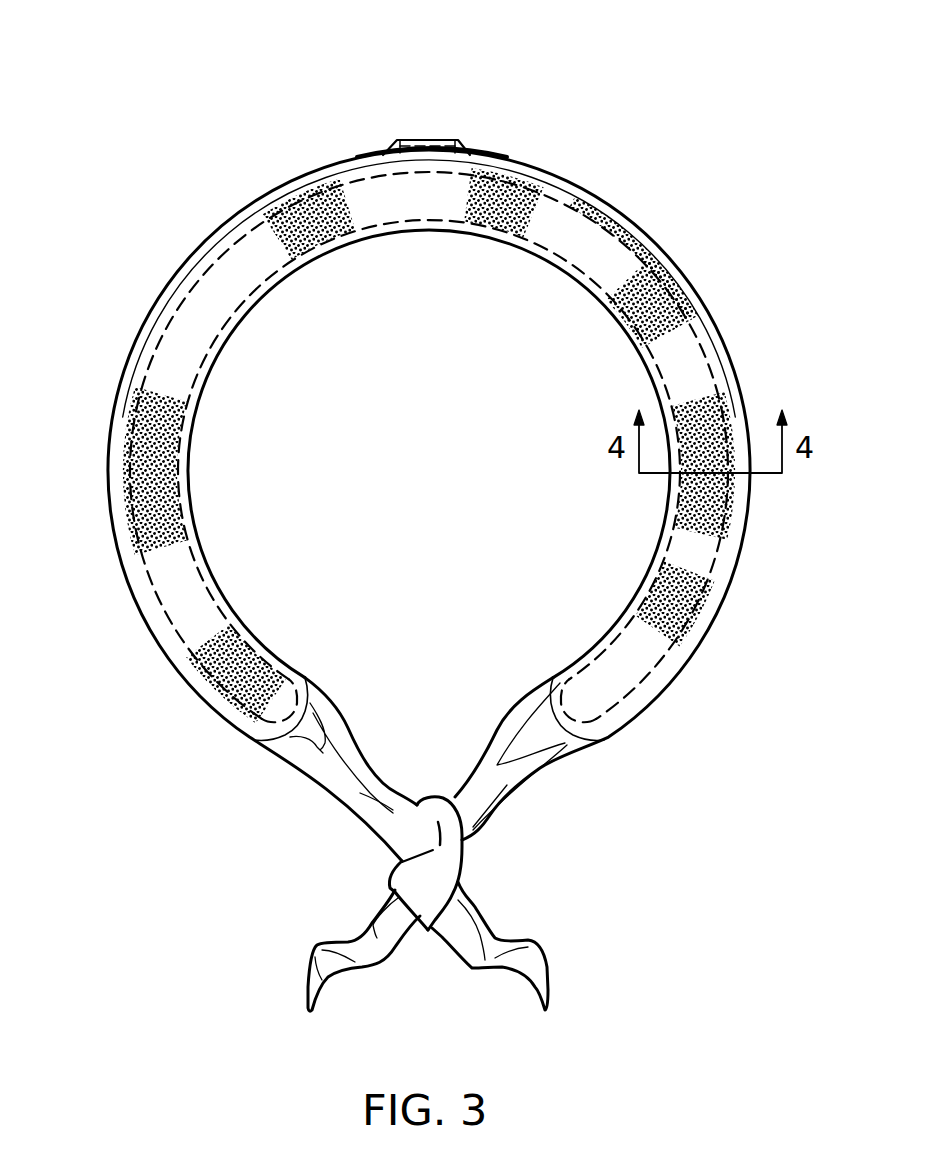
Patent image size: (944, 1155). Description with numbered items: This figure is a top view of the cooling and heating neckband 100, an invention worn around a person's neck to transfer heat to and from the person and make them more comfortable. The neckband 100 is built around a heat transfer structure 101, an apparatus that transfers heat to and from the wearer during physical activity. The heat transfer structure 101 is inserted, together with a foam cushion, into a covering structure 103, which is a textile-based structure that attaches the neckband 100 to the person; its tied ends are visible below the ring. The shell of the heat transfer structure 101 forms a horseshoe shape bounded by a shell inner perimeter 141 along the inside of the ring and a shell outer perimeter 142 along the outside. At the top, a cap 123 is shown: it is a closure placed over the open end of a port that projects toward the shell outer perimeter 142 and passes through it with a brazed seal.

The cooling and heating neckband 100 is at (128, 98).
The heat transfer structure 101 is at (685, 366).
The covering structure 103 is at (450, 855).
The cap 123 is at (426, 140).
The shell inner perimeter 141 is at (633, 322).
The shell outer perimeter 142 is at (725, 393).